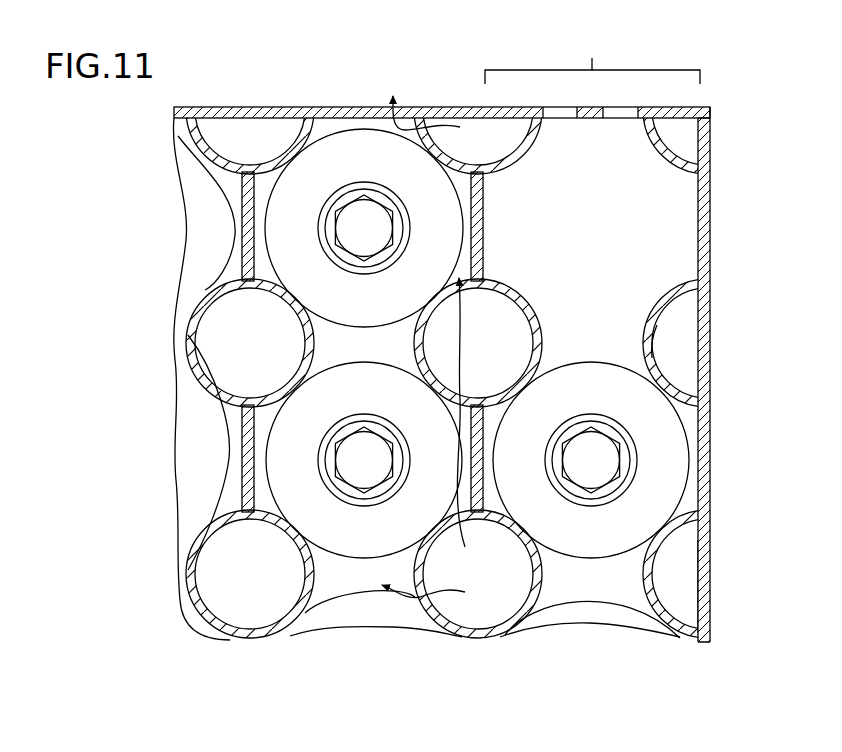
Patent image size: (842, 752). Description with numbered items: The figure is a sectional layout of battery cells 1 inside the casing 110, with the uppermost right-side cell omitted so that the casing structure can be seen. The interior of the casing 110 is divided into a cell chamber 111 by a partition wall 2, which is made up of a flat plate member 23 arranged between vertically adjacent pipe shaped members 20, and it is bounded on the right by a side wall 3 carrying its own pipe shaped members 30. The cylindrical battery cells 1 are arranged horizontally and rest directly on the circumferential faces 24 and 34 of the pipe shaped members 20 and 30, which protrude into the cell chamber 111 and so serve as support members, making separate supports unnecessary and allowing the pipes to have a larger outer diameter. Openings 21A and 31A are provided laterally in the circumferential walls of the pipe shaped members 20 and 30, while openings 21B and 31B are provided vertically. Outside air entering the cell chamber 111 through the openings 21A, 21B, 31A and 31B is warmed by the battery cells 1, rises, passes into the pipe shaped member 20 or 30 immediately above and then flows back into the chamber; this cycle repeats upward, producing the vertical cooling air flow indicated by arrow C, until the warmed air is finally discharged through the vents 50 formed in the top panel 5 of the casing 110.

The battery cell 1 is at (295, 232).
The partition wall 2 is at (240, 250).
The side wall 3 is at (712, 222).
The top panel 5 is at (464, 106).
The pipe shaped member 20 is at (298, 632).
The opening 21A is at (186, 360).
The opening 21B is at (228, 398).
The flat plate member 23 is at (243, 462).
The circumferential face 24 is at (517, 293).
The pipe shaped member 30 is at (643, 343).
The opening 31A is at (652, 358).
The opening 31B is at (700, 633).
The circumferential face 34 is at (672, 288).
The vent 50 is at (323, 106).
The casing 110 is at (713, 121).
The cell chamber 111 is at (592, 59).
The arrow C is at (466, 350).